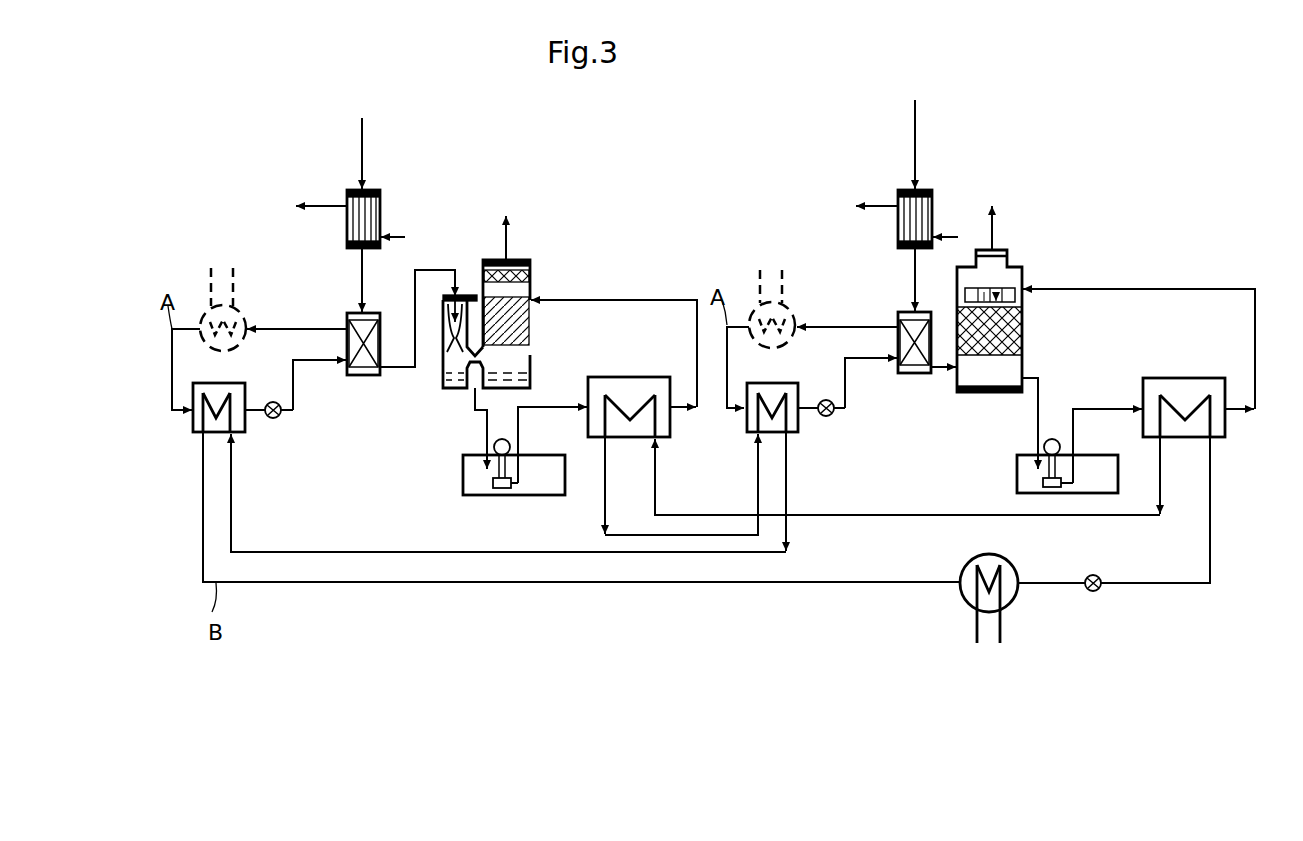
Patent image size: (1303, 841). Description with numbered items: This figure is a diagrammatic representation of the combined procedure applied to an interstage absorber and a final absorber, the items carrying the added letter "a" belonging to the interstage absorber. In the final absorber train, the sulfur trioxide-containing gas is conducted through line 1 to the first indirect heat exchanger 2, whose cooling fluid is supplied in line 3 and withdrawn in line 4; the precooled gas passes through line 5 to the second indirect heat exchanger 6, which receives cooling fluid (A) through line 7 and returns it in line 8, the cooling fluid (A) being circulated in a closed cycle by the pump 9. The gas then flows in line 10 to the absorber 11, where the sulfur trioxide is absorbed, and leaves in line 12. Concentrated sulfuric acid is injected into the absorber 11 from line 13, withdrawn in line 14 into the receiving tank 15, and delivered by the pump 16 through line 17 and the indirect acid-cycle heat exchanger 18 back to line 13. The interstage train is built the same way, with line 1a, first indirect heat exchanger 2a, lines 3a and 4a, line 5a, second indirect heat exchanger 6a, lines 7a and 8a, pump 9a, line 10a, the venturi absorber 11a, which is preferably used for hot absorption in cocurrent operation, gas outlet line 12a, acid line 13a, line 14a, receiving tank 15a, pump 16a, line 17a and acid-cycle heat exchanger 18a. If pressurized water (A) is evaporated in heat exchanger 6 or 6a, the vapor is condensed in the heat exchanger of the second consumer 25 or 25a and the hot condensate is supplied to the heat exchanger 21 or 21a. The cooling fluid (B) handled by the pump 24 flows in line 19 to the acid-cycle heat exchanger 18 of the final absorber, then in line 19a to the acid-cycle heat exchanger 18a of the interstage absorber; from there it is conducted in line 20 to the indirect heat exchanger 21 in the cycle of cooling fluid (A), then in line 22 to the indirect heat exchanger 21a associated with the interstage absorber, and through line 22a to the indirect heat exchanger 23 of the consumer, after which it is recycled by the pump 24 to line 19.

The line 1 is at (917, 135).
The line 1a is at (365, 143).
The first indirect heat exchanger 2 is at (935, 205).
The first indirect heat exchanger 2a is at (383, 200).
The line 3 is at (953, 232).
The line 3a is at (397, 229).
The line 4 is at (868, 205).
The line 4a is at (313, 203).
The line 5 is at (917, 282).
The line 5a is at (363, 273).
The second indirect heat exchanger 6 is at (932, 337).
The second indirect heat exchanger 6a is at (380, 342).
The line 7 is at (863, 362).
The line 7a is at (308, 363).
The line 8 is at (853, 327).
The line 8a is at (307, 329).
The pump 9 is at (826, 416).
The pump 9a is at (273, 418).
The line 10 is at (940, 375).
The line 10a is at (393, 370).
The absorber 11 is at (1015, 335).
The venturi absorber 11a is at (437, 370).
The line 12 is at (993, 233).
The line 12a is at (508, 238).
The line 13 is at (1115, 288).
The line 13a is at (617, 300).
The line 14 is at (1038, 400).
The line 14a is at (483, 428).
The receiving tank 15 is at (1107, 475).
The receiving tank 15a is at (548, 483).
The pump 16 is at (1062, 445).
The pump 16a is at (510, 445).
The line 17 is at (1117, 405).
The line 17a is at (555, 400).
The indirect acid-cycle heat exchanger 18 is at (1187, 378).
The indirect acid-cycle heat exchanger 18a is at (635, 378).
The line 19 is at (1212, 484).
The line 19a is at (655, 482).
The line 20 is at (757, 480).
The indirect heat exchanger 21 is at (780, 385).
The indirect heat exchanger 21a is at (235, 385).
The line 22 is at (788, 478).
The line 22a is at (203, 493).
The indirect heat exchanger of the consumer 23 is at (1010, 605).
The pump 24 is at (1094, 593).
The second consumer 25 is at (793, 312).
The second consumer 25a is at (244, 310).